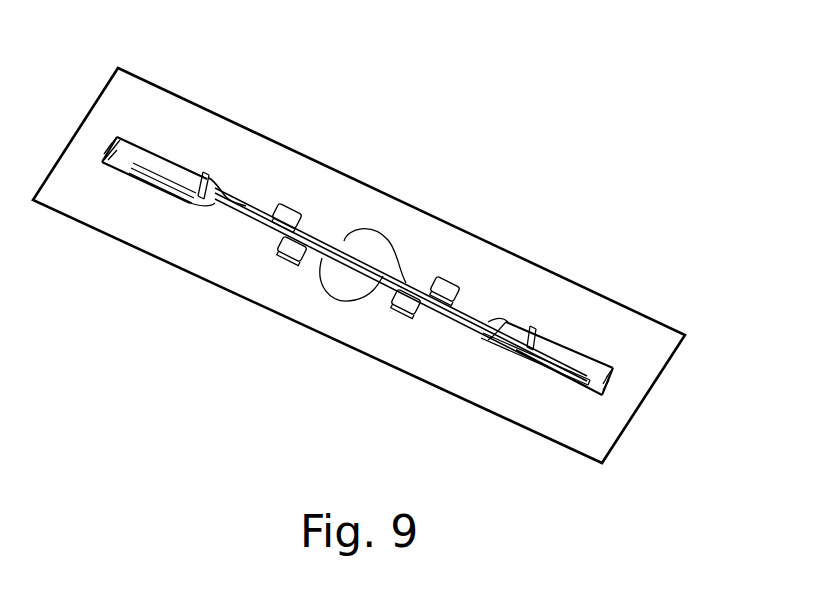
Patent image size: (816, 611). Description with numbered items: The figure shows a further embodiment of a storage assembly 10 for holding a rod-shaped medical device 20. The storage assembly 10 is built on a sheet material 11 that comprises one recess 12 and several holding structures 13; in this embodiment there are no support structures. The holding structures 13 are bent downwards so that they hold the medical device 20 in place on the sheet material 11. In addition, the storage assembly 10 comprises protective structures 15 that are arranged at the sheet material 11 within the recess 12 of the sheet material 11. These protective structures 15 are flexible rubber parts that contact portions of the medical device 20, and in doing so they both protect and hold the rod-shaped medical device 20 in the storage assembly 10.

The storage assembly 10 is at (601, 99).
The sheet material 11 is at (177, 128).
The recess 12 is at (218, 192).
The holding structures 13 is at (530, 337).
The protective structures 15 is at (287, 216).
The medical device 20 is at (348, 262).